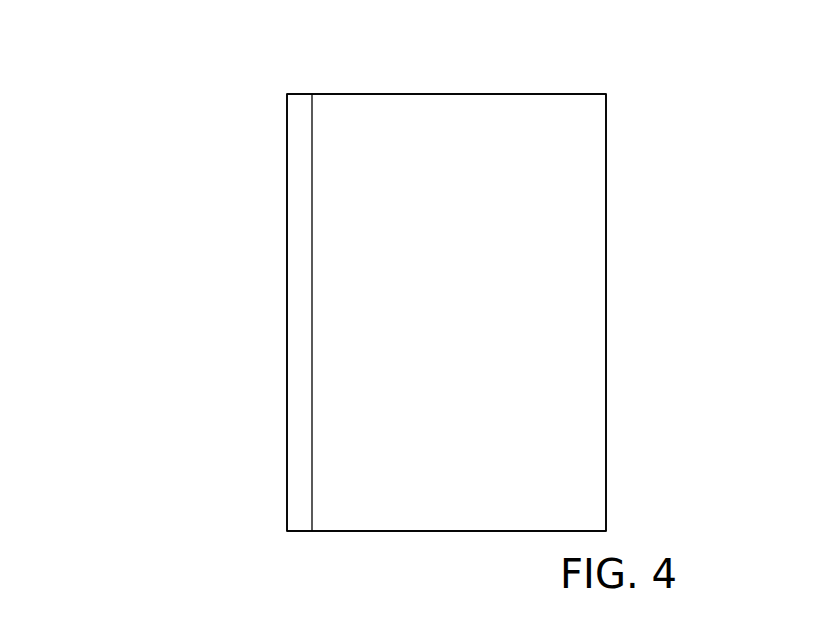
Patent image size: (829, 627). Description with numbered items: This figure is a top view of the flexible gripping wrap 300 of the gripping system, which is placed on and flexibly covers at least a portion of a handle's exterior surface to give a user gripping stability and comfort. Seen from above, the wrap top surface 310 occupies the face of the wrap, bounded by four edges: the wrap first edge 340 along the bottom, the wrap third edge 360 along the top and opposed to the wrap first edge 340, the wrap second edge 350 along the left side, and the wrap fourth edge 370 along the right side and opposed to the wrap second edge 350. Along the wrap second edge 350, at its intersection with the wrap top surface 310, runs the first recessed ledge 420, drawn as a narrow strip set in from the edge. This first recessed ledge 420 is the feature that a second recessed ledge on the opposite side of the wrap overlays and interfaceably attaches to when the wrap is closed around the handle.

The flexible gripping wrap 300 is at (212, 144).
The wrap top surface 310 is at (532, 197).
The wrap first edge 340 is at (410, 533).
The wrap second edge 350 is at (287, 363).
The wrap third edge 360 is at (409, 93).
The wrap fourth edge 370 is at (606, 413).
The first recessed ledge 420 is at (293, 448).